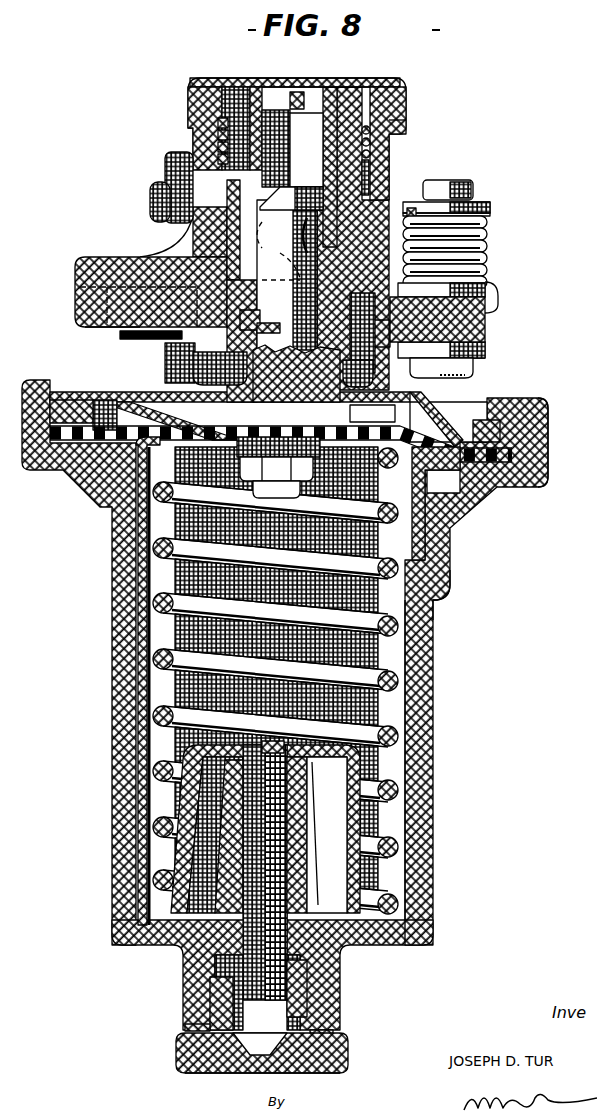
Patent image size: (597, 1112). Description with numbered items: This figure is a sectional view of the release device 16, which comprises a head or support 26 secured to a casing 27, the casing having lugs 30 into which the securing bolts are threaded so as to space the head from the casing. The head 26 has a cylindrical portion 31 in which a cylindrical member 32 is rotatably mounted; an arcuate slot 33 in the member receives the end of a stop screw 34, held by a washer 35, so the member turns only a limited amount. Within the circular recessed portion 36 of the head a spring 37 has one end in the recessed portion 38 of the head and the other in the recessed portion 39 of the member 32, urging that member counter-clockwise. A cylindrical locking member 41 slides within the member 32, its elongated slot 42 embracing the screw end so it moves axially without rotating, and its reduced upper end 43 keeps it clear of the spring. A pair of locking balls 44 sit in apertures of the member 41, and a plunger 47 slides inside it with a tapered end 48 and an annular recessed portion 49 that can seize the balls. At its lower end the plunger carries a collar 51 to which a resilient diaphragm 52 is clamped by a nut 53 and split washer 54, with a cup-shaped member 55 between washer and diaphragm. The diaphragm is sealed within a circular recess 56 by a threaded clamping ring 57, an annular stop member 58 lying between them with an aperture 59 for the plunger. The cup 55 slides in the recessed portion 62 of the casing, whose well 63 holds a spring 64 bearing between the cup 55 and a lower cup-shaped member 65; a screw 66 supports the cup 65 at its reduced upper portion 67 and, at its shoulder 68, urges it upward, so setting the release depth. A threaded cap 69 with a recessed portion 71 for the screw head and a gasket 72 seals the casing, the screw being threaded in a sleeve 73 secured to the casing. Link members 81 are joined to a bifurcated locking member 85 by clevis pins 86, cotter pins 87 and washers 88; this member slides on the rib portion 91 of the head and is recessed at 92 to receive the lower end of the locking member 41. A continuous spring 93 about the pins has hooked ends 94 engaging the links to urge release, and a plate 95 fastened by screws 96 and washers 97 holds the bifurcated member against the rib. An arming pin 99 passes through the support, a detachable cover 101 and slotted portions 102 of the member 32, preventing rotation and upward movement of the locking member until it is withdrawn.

The release device 16 is at (299, 705).
The head or support 26 is at (115, 257).
The casing 27 is at (474, 512).
The lugs 30 is at (150, 338).
The cylindrical portion 31 is at (382, 200).
The cylindrical member 32 is at (333, 80).
The arcuate slot 33 is at (250, 176).
The stop screw 34 is at (155, 186).
The washer 35 is at (180, 162).
The circular recessed portion 36 is at (366, 92).
The spring 37 is at (371, 158).
The recessed portion 38 is at (370, 180).
The recessed portion 39 is at (215, 80).
The locking member 41 is at (275, 92).
The elongated slot 42 is at (266, 150).
The reduced-diameter upper end 43 is at (255, 88).
The locking balls 44 is at (287, 280).
The rod or plunger 47 is at (327, 200).
The tapered end 48 is at (291, 199).
The annular recessed portion 49 is at (278, 251).
The shoulder or collar 51 is at (372, 413).
The resilient diaphragm 52 is at (415, 400).
The nut 53 is at (314, 477).
The split washer 54 is at (325, 452).
The cup-shaped member 55 is at (413, 484).
The circular recess 56 is at (548, 468).
The clamping ring 57 is at (500, 406).
The annular stop member 58 is at (448, 422).
The aperture 59 is at (230, 388).
The recessed portion 62 is at (448, 572).
The well 63 is at (395, 707).
The spring 64 is at (382, 636).
The cup-shaped member 65 is at (378, 786).
The screw 66 is at (245, 1066).
The reduced upper portion 67 is at (272, 744).
The shoulder 68 is at (285, 742).
The plug or threaded cap 69 is at (178, 1048).
The recessed portion 71 is at (336, 1015).
The gasket 72 is at (186, 1023).
The sleeve 73 is at (328, 823).
The link members 81 is at (488, 292).
The bifurcated locking member 85 is at (488, 320).
The clevis pins 86 is at (462, 182).
The cotter pins 87 is at (478, 202).
The washers 88 is at (491, 209).
The raised or rib portion 91 is at (88, 328).
The recess 92 is at (262, 330).
The continuous spring 93 is at (486, 259).
The hooked ends 94 is at (499, 287).
The plate 95 is at (382, 349).
The screws 96 is at (193, 380).
The washers 97 is at (167, 356).
The arming pin 99 is at (300, 87).
The detachable cover 101 is at (422, 110).
The slotted portions 102 is at (297, 91).